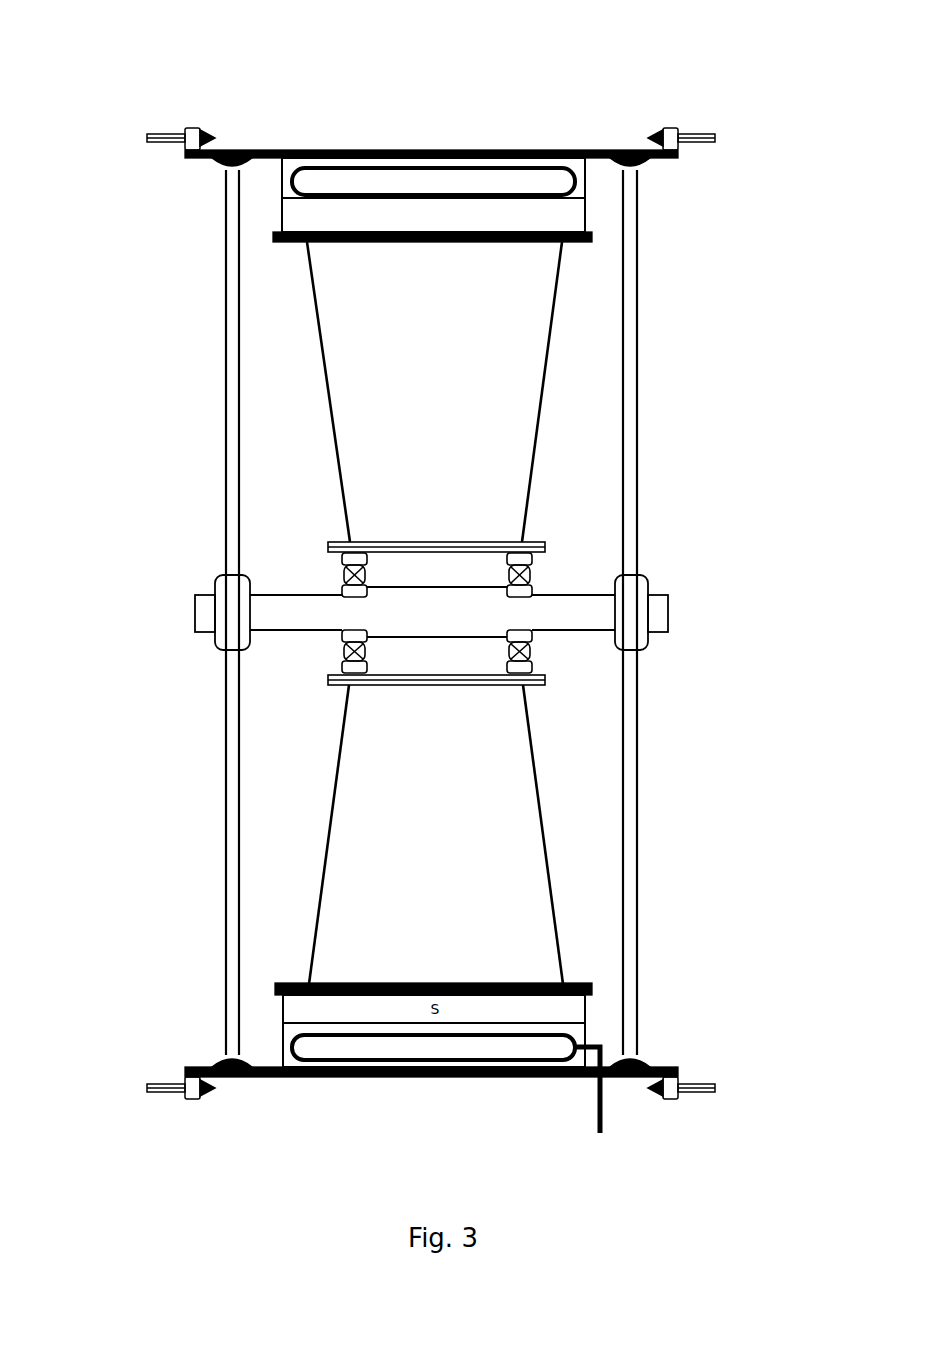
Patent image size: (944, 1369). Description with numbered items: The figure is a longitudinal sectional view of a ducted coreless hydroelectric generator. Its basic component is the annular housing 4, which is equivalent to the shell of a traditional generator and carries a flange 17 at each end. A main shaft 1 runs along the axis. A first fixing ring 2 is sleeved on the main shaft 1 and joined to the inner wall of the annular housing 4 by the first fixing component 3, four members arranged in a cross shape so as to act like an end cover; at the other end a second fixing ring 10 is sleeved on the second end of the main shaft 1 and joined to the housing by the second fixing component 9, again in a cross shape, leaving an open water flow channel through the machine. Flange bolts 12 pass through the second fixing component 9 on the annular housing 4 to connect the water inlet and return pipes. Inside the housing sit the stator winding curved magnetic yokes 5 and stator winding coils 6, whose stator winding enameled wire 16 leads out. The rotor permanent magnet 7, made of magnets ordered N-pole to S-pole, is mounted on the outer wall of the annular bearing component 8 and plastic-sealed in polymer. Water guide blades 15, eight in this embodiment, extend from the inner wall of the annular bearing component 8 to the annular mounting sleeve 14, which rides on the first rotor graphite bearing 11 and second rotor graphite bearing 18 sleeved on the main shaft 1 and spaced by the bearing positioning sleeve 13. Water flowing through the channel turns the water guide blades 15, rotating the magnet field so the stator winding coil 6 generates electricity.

The main shaft 1 is at (203, 610).
The first fixing ring 2 is at (222, 578).
The first fixing component 3 is at (237, 345).
The annular housing 4 is at (240, 148).
The stator winding curved magnetic yoke 5 is at (328, 150).
The stator winding coil 6 is at (390, 175).
The rotor permanent magnet 7 is at (452, 212).
The annular bearing component 8 is at (603, 148).
The second fixing component 9 is at (630, 385).
The second fixing ring 10 is at (628, 590).
The first rotor graphite bearing 11 is at (343, 597).
The flange bolt 12 is at (165, 1093).
The bearing positioning sleeve 13 is at (405, 623).
The annular mounting sleeve 14 is at (438, 677).
The water guide blade 15 is at (478, 912).
The stator winding enameled wire 16 is at (596, 1112).
The flange 17 is at (672, 1098).
The second rotor graphite bearing 18 is at (528, 678).